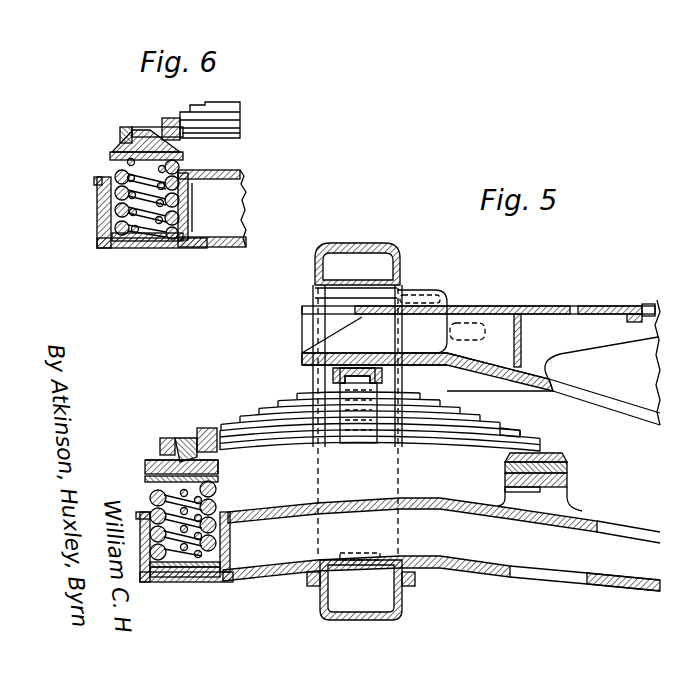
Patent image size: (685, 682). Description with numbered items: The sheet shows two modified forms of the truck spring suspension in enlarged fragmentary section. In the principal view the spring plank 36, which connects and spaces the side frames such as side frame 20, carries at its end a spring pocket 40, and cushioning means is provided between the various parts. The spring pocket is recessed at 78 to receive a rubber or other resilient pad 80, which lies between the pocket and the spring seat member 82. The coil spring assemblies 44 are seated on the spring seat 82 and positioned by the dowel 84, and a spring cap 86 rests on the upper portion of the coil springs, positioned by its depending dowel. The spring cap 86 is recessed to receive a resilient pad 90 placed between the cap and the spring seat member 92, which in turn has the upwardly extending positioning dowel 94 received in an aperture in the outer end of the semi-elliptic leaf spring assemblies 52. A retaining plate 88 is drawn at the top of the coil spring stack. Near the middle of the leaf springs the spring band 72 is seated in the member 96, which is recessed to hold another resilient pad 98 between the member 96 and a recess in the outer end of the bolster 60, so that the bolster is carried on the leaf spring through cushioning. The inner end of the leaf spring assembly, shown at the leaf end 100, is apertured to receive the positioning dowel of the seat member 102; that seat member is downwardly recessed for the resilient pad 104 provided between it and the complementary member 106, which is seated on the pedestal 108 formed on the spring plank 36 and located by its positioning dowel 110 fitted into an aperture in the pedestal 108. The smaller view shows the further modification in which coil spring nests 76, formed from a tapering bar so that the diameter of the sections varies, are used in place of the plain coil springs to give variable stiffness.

In FIG. 5, the side frame 20 is at (358, 243).
In FIG. 5, the spring plank 36 is at (610, 562).
In FIG. 5, the spring pocket 40 is at (231, 579).
In FIG. 5, the coil spring assemblies 44 is at (150, 498).
In FIG. 5, the semi-elliptic spring assemblies 52 is at (300, 400).
In FIG. 5, the bolster 60 is at (606, 305).
In FIG. 5, the spring band 72 is at (358, 443).
In FIG. 6, the coil spring nests 76 is at (112, 210).
In FIG. 5, the recess 78 is at (203, 578).
In FIG. 5, the resilient pad 80 is at (185, 578).
In FIG. 5, the spring seat member 82 is at (233, 562).
In FIG. 5, the dowel 84 is at (233, 540).
In FIG. 5, the spring cap 86 is at (218, 486).
In FIG. 5, the cap plate 88 is at (160, 462).
In FIG. 5, the resilient pad 90 is at (220, 479).
In FIG. 5, the spring seat member 92 is at (218, 467).
In FIG. 5, the positioning dowel 94 is at (188, 438).
In FIG. 5, the member 96 is at (333, 370).
In FIG. 5, the resilient pad 98 is at (366, 366).
In FIG. 5, the leaf end 100 is at (538, 440).
In FIG. 5, the seat member 102 is at (567, 460).
In FIG. 5, the resilient pad 104 is at (567, 468).
In FIG. 5, the complementary member 106 is at (505, 472).
In FIG. 5, the pedestal 108 is at (560, 498).
In FIG. 5, the positioning dowel 110 is at (505, 489).